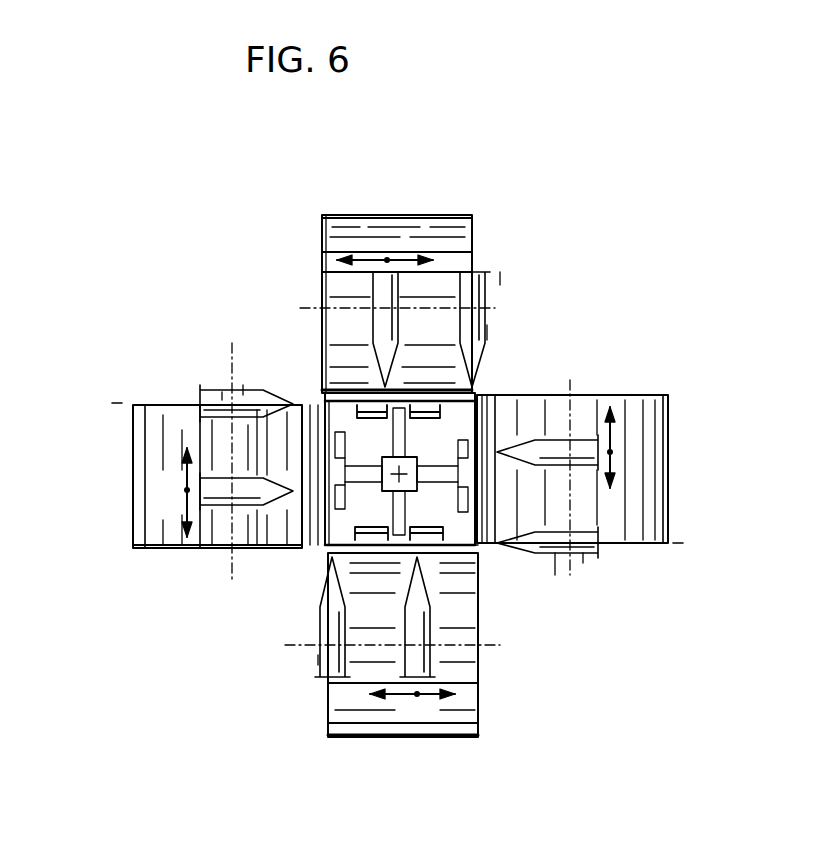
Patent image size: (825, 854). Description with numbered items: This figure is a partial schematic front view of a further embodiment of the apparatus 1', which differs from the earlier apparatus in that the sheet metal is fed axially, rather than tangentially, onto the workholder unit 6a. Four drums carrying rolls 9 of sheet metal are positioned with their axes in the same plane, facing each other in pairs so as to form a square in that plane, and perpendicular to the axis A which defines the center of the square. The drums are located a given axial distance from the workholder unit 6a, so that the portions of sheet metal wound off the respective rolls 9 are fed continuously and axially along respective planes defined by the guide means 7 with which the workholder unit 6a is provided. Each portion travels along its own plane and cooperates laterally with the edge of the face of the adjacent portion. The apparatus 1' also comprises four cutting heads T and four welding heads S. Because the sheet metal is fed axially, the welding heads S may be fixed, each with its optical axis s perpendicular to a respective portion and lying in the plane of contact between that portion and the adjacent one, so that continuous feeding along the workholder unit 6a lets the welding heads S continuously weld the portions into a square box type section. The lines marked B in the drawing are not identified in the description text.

The apparatus 1' is at (397, 440).
The rolls 9 is at (450, 247).
The guide means 7 is at (365, 406).
The axis A is at (383, 493).
The workholder unit 6a is at (438, 512).
The cutting heads T is at (365, 297).
The welding heads S is at (487, 332).
The optical axis s is at (500, 277).
The carriage axis B is at (500, 303).